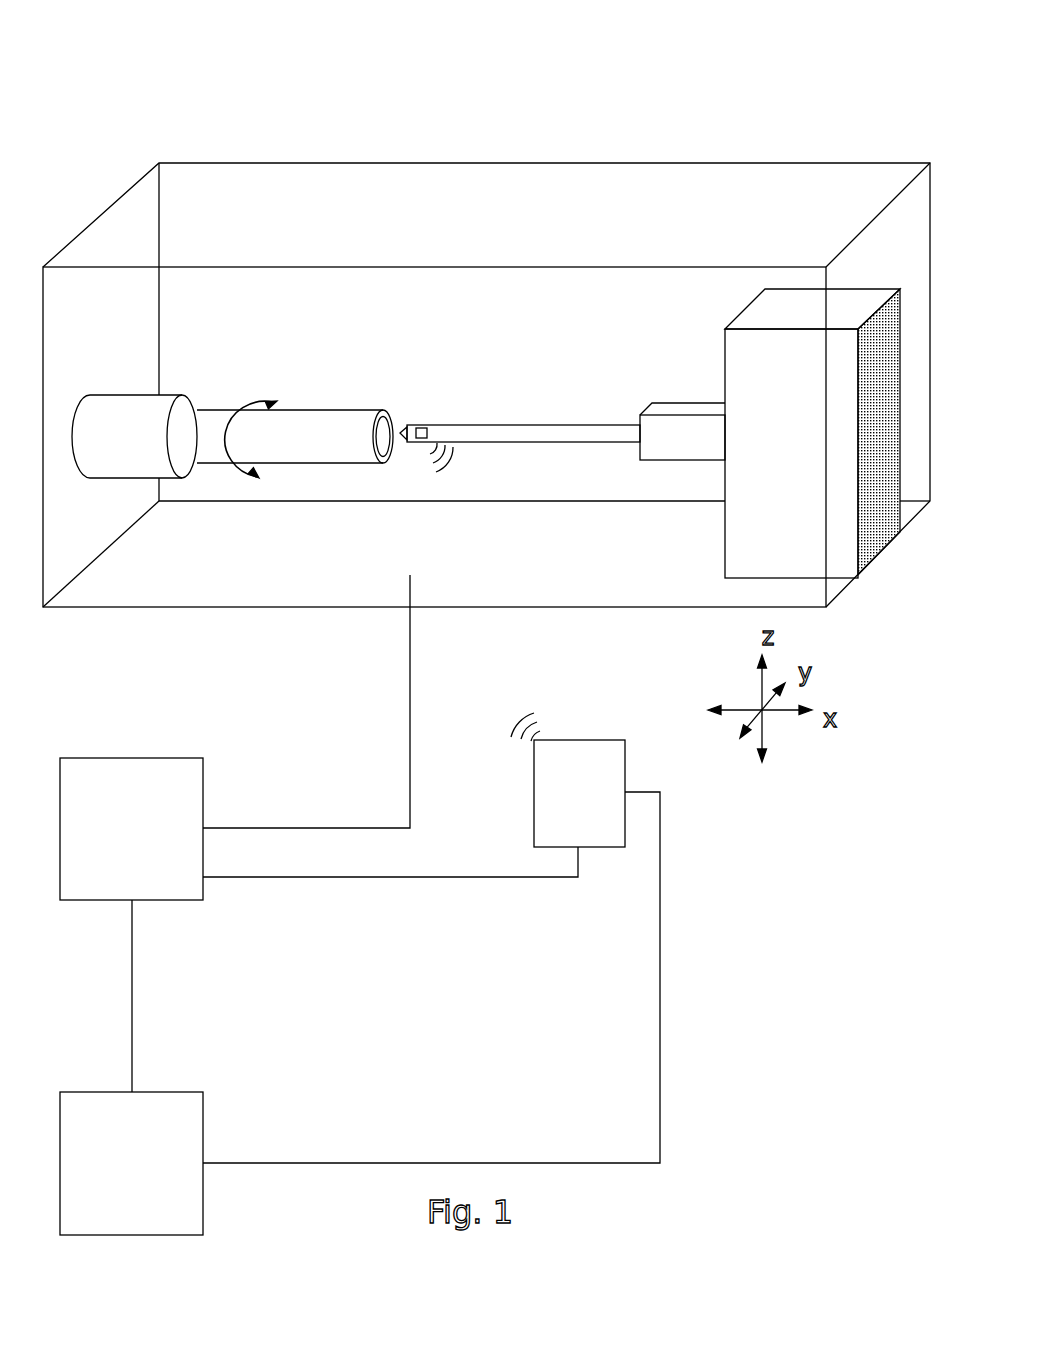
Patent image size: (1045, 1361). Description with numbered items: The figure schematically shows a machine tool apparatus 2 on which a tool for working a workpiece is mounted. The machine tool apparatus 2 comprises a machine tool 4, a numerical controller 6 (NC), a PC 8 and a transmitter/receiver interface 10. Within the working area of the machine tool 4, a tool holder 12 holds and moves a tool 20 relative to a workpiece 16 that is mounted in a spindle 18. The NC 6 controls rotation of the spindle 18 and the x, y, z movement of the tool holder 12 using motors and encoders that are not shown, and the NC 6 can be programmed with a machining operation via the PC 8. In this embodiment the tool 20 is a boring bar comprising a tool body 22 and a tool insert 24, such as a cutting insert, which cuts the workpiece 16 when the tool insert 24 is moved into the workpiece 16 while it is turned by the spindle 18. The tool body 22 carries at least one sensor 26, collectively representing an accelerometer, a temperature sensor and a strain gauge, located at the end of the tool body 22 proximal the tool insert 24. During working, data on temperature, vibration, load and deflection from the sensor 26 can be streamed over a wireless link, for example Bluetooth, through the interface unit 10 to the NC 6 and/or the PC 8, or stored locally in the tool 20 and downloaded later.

The machine tool apparatus 2 is at (92, 113).
The machine tool 4 is at (650, 145).
The numerical controller 6 is at (182, 735).
The PC 8 is at (203, 1137).
The transmitter/receiver interface 10 is at (561, 813).
The tool holder 12 is at (669, 455).
The workpiece 16 is at (262, 463).
The spindle 18 is at (114, 463).
The tool 20 is at (531, 395).
The tool body 22 is at (567, 443).
The tool insert 24 is at (403, 430).
The sensor 26 is at (423, 440).